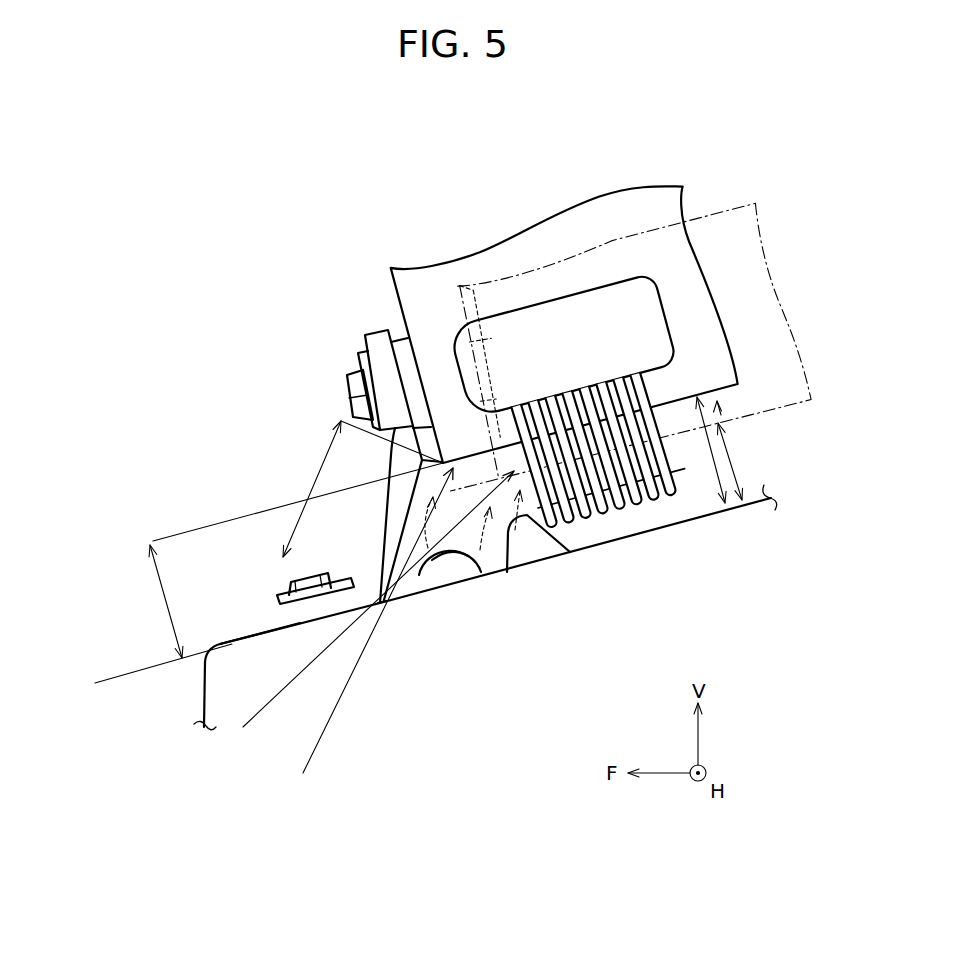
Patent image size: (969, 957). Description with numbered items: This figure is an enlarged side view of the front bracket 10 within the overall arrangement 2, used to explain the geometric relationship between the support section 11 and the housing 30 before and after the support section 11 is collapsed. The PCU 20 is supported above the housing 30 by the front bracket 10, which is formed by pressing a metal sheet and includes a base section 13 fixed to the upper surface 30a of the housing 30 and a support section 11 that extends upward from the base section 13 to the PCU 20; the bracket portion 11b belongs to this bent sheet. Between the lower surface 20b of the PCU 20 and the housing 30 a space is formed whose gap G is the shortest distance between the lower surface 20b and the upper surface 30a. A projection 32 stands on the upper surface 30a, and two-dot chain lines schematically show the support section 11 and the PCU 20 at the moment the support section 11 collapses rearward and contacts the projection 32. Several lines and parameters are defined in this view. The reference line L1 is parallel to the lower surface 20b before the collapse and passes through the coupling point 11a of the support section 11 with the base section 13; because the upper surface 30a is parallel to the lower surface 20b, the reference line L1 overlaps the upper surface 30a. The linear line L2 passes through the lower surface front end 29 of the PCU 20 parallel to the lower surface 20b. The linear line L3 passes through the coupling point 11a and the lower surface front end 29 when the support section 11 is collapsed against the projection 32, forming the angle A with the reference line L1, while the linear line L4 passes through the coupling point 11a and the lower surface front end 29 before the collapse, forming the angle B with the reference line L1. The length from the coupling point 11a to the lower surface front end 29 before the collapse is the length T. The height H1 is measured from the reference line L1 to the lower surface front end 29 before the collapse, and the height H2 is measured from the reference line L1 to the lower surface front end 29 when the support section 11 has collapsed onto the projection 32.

The connector device 2 is at (295, 220).
The front bracket 10 is at (375, 330).
The support section 11 is at (375, 537).
The coupling point 11a is at (382, 604).
The bent portion of bracket 11b is at (462, 573).
The base section 13 is at (280, 612).
The PCU 20 is at (537, 235).
The lower surface of the PCU 20b is at (723, 424).
The lower surface front end 29 is at (563, 560).
The housing 30 is at (213, 694).
The upper surface of the housing 30a is at (229, 640).
The projection 32 is at (445, 570).
The reference line L1 is at (113, 677).
The linear line L2 is at (198, 527).
The linear line L3 is at (250, 724).
The linear line L4 is at (305, 772).
The height H1 is at (161, 601).
The height H2 is at (743, 461).
The length T is at (363, 489).
The space gap G is at (704, 450).
The angle A is at (540, 560).
The angle B is at (487, 558).